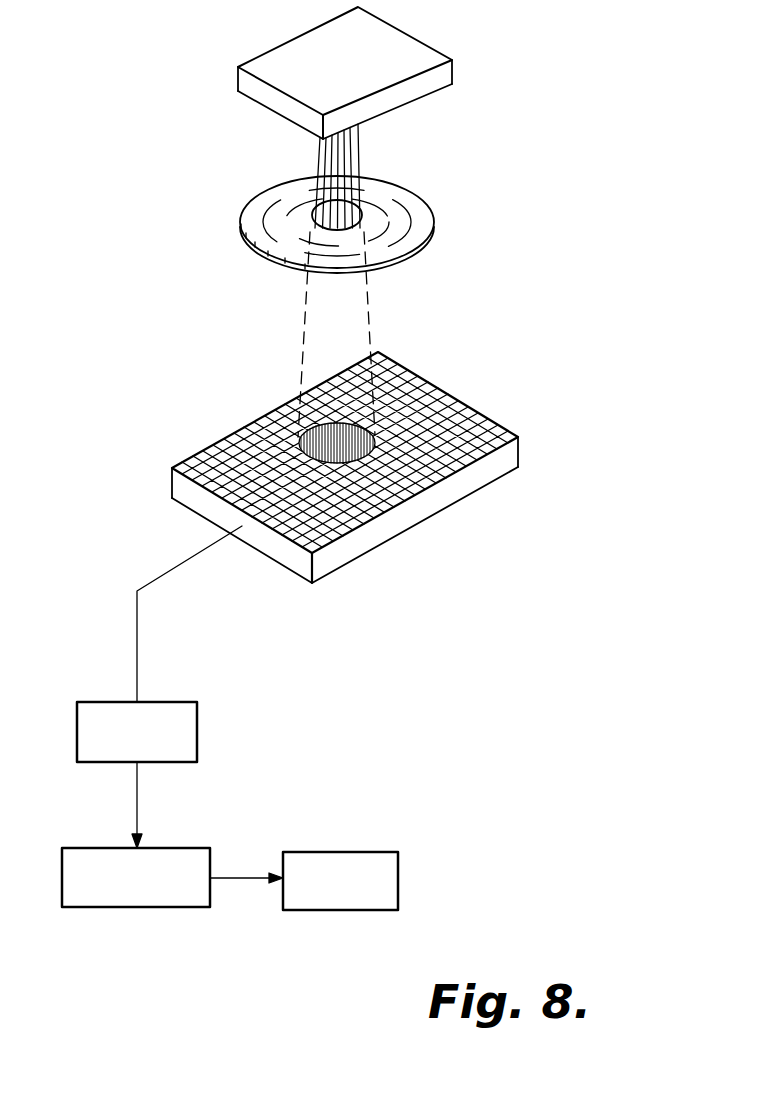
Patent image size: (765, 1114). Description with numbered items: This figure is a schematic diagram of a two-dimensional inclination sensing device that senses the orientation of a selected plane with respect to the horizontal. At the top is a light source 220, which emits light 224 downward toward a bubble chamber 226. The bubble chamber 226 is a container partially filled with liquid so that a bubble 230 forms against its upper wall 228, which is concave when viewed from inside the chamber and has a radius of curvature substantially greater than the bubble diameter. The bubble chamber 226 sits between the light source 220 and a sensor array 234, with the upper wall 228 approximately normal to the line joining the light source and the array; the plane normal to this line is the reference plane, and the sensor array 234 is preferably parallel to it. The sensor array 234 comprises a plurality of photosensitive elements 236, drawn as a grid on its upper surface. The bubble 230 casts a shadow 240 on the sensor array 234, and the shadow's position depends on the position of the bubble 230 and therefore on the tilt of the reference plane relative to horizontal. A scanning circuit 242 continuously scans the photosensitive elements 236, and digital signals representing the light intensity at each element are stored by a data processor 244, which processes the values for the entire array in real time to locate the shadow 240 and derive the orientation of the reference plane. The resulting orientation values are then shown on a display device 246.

The light source 220 is at (423, 58).
The light beam 224 is at (353, 160).
The bubble chamber 226 is at (427, 205).
The upper wall 228 is at (413, 238).
The bubble 230 is at (315, 212).
The sensor array 234 is at (502, 465).
The photosensitive elements 236 is at (483, 430).
The shadow 240 is at (307, 440).
The scanning circuit 242 is at (92, 700).
The data processor 244 is at (77, 852).
The display device 246 is at (388, 858).